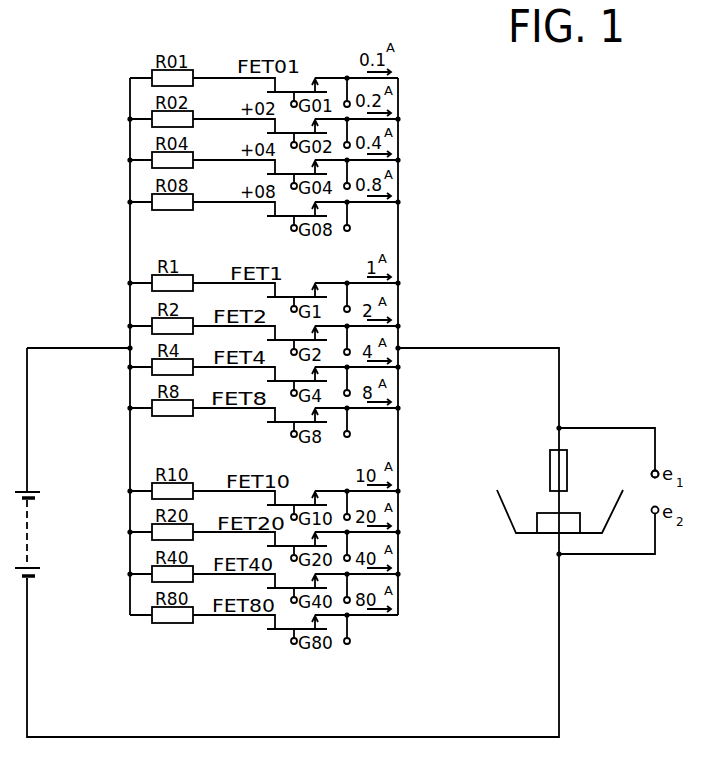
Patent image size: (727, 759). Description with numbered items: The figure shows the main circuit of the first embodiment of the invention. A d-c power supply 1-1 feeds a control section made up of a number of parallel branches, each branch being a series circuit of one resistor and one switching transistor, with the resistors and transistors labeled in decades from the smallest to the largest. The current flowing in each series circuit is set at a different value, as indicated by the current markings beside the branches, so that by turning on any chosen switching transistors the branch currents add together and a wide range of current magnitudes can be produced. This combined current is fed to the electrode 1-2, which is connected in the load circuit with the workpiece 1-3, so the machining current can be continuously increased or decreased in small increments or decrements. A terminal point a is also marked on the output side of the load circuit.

The d-c power supply 1-1 is at (54, 523).
The electrode 1-2 is at (550, 455).
The workpiece 1-3 is at (546, 535).
The terminal e1 output point a is at (686, 474).